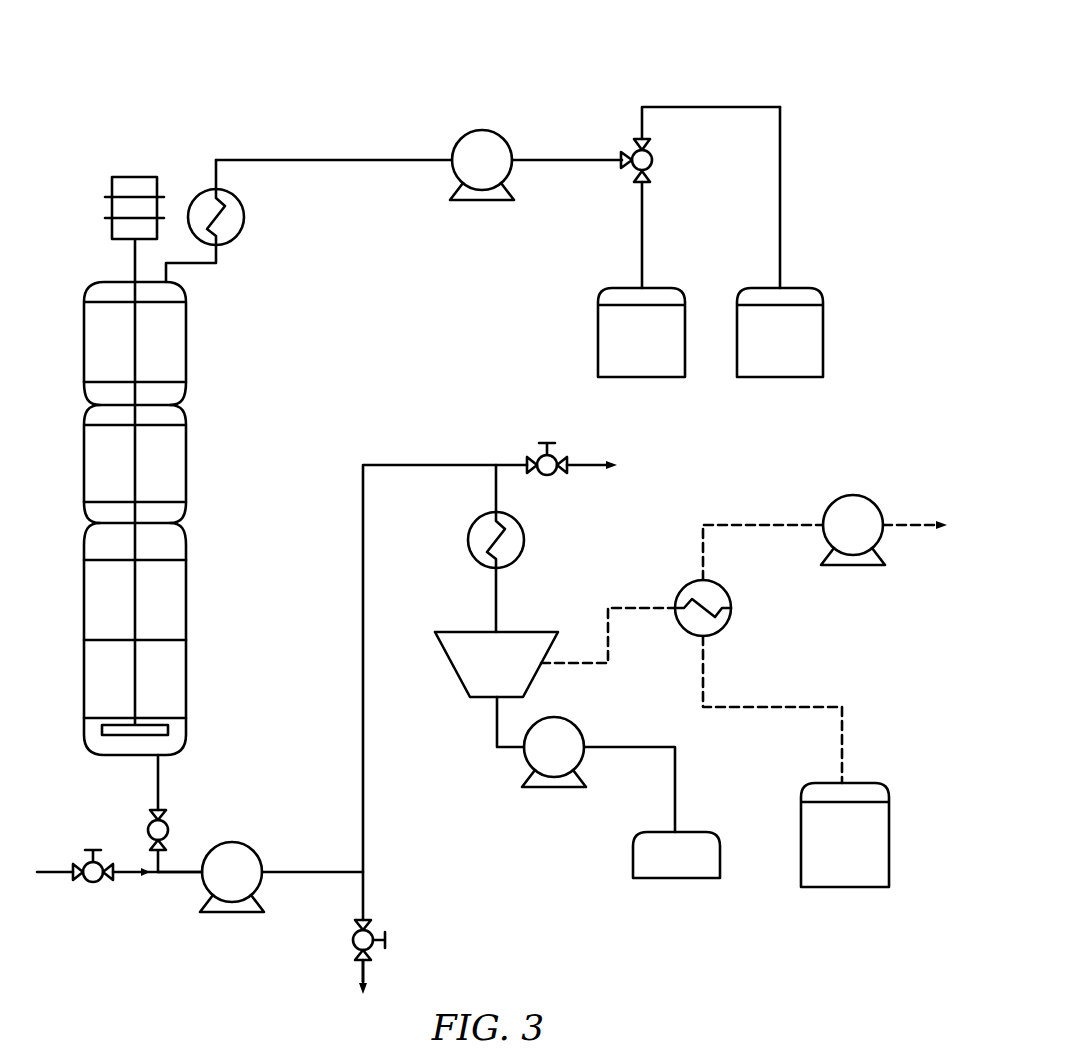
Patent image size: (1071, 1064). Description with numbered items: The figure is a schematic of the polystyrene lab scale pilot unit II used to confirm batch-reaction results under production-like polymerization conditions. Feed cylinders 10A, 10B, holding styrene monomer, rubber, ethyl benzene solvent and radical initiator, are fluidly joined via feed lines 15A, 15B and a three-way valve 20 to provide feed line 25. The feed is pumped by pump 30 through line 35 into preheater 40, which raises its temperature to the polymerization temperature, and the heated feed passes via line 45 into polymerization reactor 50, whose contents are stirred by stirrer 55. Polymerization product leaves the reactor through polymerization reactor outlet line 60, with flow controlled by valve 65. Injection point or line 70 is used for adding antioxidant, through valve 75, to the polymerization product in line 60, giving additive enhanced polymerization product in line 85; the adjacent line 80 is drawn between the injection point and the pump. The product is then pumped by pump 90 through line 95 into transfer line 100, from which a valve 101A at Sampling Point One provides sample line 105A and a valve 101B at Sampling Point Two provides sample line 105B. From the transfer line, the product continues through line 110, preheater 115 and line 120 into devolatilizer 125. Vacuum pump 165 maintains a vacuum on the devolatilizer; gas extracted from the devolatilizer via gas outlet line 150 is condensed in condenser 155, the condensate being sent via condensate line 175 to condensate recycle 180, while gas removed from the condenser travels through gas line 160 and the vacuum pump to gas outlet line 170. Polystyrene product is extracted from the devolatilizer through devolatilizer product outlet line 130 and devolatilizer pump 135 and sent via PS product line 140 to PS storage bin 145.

The polystyrene lab scale pilot unit II is at (736, 34).
The line 35 is at (362, 160).
The pump 30 is at (482, 165).
The feed line 25 is at (556, 162).
The three-way valve 20 is at (620, 136).
The feed line 15A is at (642, 221).
The feed line 15B is at (780, 204).
The feed cylinder 10A is at (641, 332).
The feed cylinder 10B is at (780, 332).
The preheater 40 is at (245, 207).
The line 45 is at (204, 265).
The stirrer 55 is at (112, 205).
The polymerization reactor 50 is at (222, 404).
The polymerization reactor outlet line 60 is at (158, 778).
The valve 65 is at (148, 826).
The injection point or line 70 is at (50, 872).
The valve 75 is at (84, 880).
The line 80 is at (130, 874).
The line 85 is at (182, 871).
The pump 90 is at (232, 877).
The line 95 is at (296, 872).
The transfer line 100 is at (348, 635).
The valve 101A is at (352, 946).
The sample line 105A is at (402, 959).
The valve 101B is at (573, 485).
The sample line 105B is at (597, 455).
The line 110 is at (496, 497).
The preheater 115 is at (525, 552).
The line 120 is at (497, 592).
The devolatilizer 125 is at (496, 664).
The devolatilizer product outlet line 130 is at (497, 733).
The devolatilizer pump 135 is at (554, 752).
The PS product line 140 is at (620, 747).
The PS storage bin 145 is at (676, 855).
The gas outlet line 150 is at (608, 642).
The condenser 155 is at (729, 624).
The gas line 160 is at (740, 525).
The vacuum pump 165 is at (853, 530).
The gas outlet line 170 is at (905, 527).
The condensate line 175 is at (762, 707).
The condensate recycle 180 is at (845, 835).